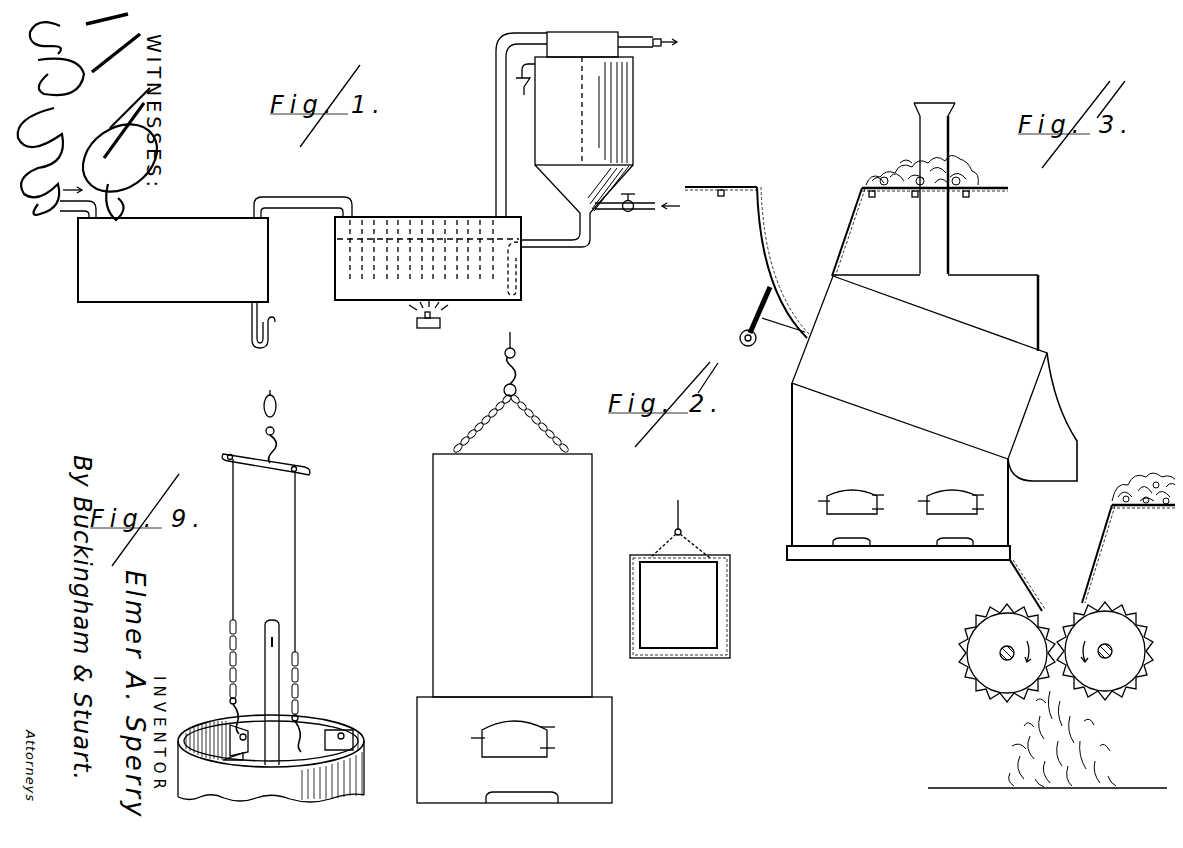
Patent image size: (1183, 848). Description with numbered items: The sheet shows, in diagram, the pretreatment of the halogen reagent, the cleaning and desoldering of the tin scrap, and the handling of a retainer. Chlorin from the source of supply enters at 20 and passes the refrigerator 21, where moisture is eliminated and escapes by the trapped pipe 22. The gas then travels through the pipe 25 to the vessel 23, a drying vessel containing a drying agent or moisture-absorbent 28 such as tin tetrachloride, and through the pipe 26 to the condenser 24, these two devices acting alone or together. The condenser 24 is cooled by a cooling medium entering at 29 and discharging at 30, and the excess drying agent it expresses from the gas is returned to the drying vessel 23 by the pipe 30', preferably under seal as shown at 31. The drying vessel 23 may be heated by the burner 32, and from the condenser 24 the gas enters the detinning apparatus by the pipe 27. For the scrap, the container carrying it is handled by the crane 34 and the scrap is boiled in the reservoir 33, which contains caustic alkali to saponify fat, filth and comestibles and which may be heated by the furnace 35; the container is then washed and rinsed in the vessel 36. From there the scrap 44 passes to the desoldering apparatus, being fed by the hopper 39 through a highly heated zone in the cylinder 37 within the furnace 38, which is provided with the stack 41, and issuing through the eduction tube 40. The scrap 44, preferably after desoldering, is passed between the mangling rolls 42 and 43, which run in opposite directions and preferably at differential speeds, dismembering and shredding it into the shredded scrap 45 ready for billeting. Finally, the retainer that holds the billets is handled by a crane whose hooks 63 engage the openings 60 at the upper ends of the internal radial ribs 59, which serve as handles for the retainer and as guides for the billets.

In FIG. 1, the chlorin entry 20 is at (58, 212).
In FIG. 1, the refrigerator 21 is at (173, 260).
In FIG. 1, the trapped pipe 22 is at (243, 326).
In FIG. 1, the drying vessel 23 is at (428, 243).
In FIG. 1, the condenser 24 is at (582, 33).
In FIG. 1, the pipe 25 is at (312, 186).
In FIG. 1, the pipe 26 is at (501, 125).
In FIG. 1, the pipe 27 is at (632, 46).
In FIG. 1, the drying agent 28 is at (336, 234).
In FIG. 1, the cooling medium inlet 29 is at (637, 189).
In FIG. 1, the cooling medium discharge 30 is at (544, 79).
In FIG. 1, the return pipe 30' is at (561, 245).
In FIG. 1, the seal 31 is at (510, 273).
In FIG. 1, the burner 32 is at (432, 316).
In FIG. 2, the reservoir 33 is at (512, 575).
In FIG. 2, the crane 34 is at (586, 445).
In FIG. 2, the furnace 35 is at (514, 750).
In FIG. 2, the washing vessel 36 is at (724, 596).
In FIG. 3, the cylinder 37 is at (919, 367).
In FIG. 3, the furnace 38 is at (912, 374).
In FIG. 3, the hopper 39 is at (747, 266).
In FIG. 3, the eduction tube 40 is at (1042, 417).
In FIG. 3, the stack 41 is at (936, 132).
In FIG. 3, the mangling roll 42 is at (1105, 651).
In FIG. 3, the mangling roll 43 is at (1007, 653).
In FIG. 2, the scrap 44 is at (678, 605).
In FIG. 3, the scrap 44 is at (1018, 368).
In FIG. 3, the shredded scrap 45 is at (1030, 742).
In FIG. 9, the internal radial rib 59 is at (230, 735).
In FIG. 9, the perforation 60 is at (339, 730).
In FIG. 9, the hook 63 is at (302, 685).